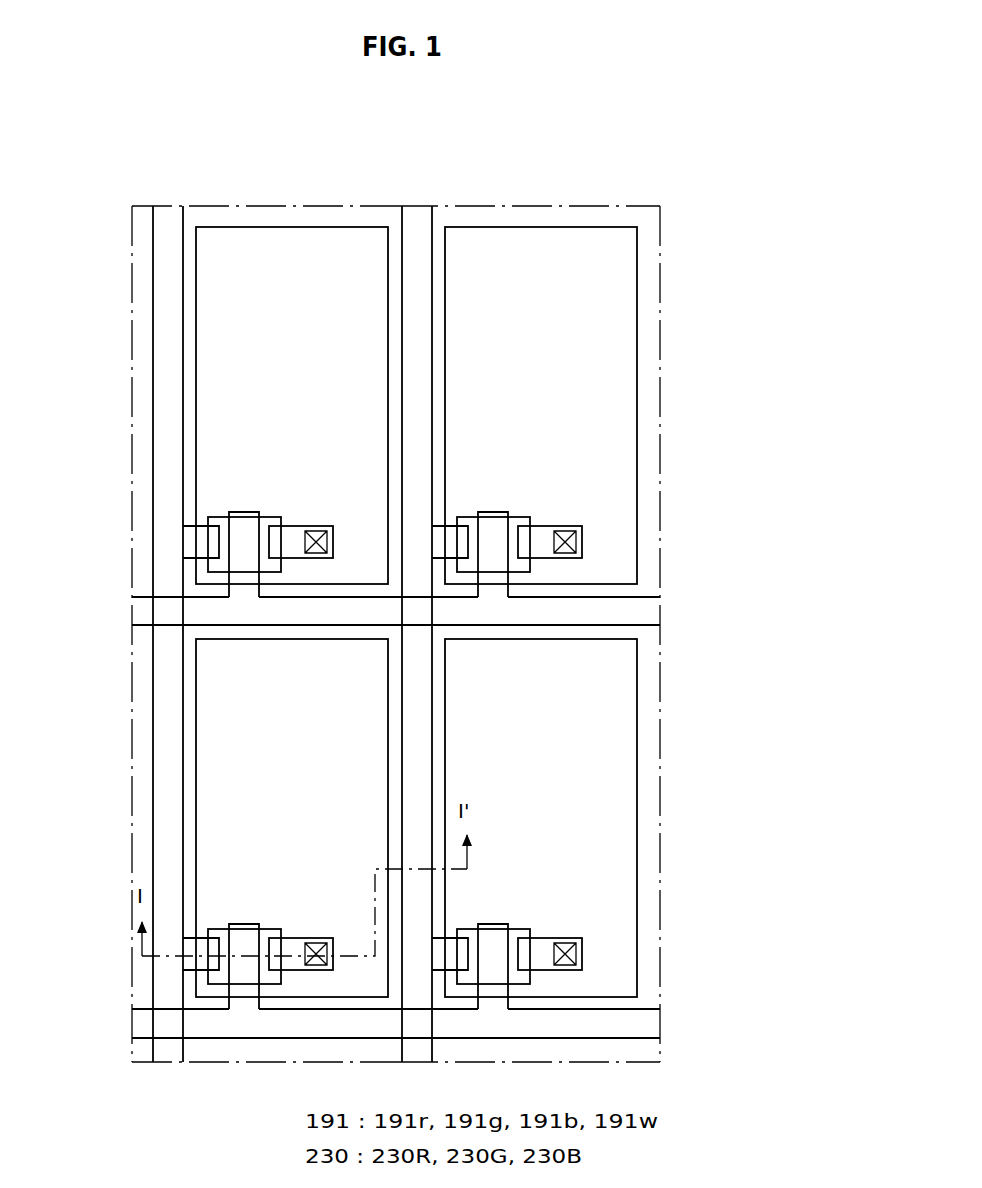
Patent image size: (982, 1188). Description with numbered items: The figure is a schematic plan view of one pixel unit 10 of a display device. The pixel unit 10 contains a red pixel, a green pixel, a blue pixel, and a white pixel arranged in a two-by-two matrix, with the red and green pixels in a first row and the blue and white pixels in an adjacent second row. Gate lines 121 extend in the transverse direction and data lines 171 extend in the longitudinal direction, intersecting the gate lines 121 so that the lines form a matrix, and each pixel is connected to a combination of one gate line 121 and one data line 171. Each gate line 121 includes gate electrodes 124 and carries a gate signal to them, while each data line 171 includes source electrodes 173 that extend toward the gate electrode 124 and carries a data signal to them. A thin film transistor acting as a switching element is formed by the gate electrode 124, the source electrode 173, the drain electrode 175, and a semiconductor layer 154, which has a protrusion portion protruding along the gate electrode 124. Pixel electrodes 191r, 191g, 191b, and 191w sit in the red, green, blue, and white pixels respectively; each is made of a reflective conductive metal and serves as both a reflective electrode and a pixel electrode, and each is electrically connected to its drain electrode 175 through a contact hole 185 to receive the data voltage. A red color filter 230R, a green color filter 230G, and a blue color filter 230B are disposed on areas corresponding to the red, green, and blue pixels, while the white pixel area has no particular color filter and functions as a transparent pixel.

The pixel unit 10 is at (181, 186).
The data line 171 is at (183, 398).
The gate line 121 is at (197, 627).
The gate electrode 124 is at (262, 520).
The semiconductor layer 154 is at (215, 516).
The source electrode 173 is at (195, 572).
The drain electrode 175 is at (312, 526).
The contact hole 185 is at (323, 531).
The pixel electrode 191r is at (291, 227).
The pixel electrode 191g is at (537, 227).
The pixel electrode 191b is at (196, 796).
The pixel electrode 191w is at (638, 802).
The red color filter 230R is at (342, 206).
The green color filter 230G is at (586, 206).
The blue color filter 230B is at (233, 1064).